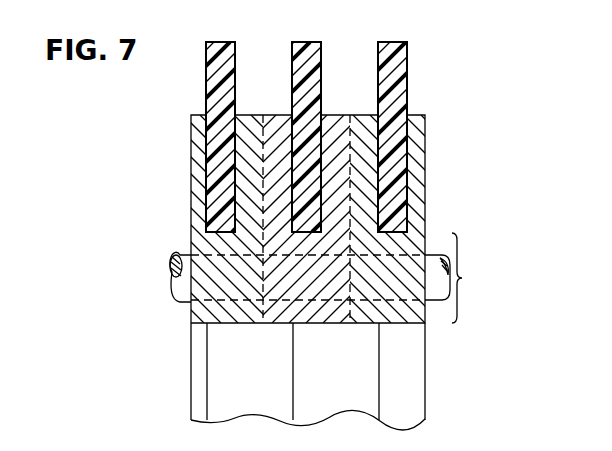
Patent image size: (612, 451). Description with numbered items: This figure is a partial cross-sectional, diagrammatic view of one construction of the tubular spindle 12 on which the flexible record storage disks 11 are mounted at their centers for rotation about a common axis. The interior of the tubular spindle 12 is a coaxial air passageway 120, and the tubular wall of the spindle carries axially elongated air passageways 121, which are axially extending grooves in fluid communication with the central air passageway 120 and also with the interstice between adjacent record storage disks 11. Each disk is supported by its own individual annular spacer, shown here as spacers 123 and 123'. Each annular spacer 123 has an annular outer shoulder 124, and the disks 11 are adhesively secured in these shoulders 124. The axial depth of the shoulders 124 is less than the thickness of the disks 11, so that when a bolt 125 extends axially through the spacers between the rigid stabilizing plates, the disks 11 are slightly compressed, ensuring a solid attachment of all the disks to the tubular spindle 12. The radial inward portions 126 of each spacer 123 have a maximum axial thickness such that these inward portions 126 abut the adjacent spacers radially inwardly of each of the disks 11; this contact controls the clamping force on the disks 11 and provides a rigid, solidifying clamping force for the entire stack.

The flexible record storage disk 11 is at (223, 43).
The tubular spindle 12 is at (435, 130).
The coaxial air passageway 120 is at (404, 380).
The axially elongated air passageway 121 is at (367, 123).
The annular spacer 123 is at (238, 197).
The annular spacer 123' is at (363, 240).
The annular outer shoulder 124 is at (208, 228).
The bolt 125 is at (180, 283).
The radial inward portion 126 is at (462, 278).